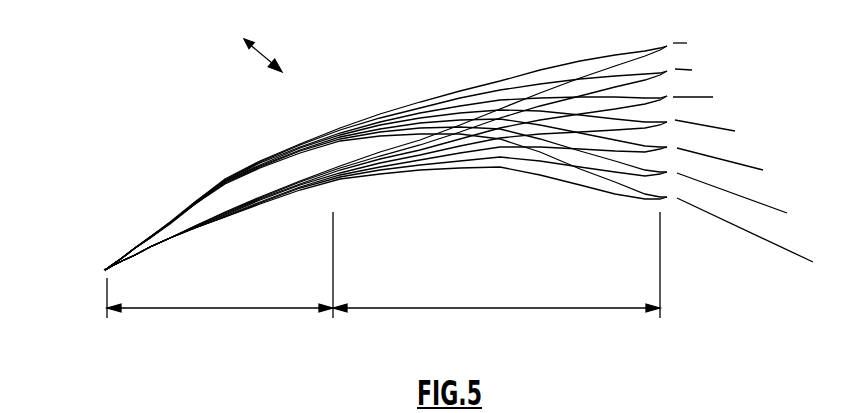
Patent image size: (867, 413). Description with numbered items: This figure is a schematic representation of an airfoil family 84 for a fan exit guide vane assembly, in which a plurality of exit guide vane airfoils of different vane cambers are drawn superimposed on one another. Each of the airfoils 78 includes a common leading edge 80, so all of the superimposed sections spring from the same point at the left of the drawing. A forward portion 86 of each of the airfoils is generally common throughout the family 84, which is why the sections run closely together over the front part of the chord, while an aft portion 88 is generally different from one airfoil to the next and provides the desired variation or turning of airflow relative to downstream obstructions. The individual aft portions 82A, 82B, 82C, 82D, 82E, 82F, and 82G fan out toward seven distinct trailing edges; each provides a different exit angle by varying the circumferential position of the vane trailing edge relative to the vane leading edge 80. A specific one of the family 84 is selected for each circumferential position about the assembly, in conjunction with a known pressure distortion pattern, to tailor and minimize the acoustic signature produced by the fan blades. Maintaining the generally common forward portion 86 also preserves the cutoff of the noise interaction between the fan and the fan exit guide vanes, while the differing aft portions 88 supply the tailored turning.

The airfoil 78 is at (459, 156).
The leading edge 80 is at (88, 269).
The aft portion 82A is at (668, 46).
The aft portion 82B is at (668, 72).
The aft portion 82C is at (668, 97).
The aft portion 82D is at (668, 122).
The aft portion 82E is at (668, 147).
The aft portion 82F is at (668, 172).
The aft portion 82G is at (668, 198).
The airfoil family 84 is at (246, 41).
The forward portion 86 is at (213, 310).
The aft portion 88 is at (502, 309).